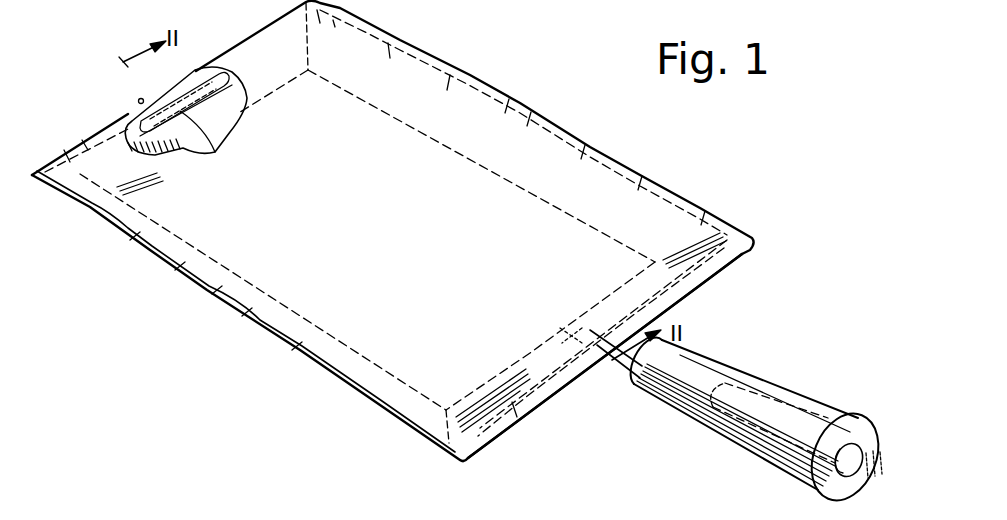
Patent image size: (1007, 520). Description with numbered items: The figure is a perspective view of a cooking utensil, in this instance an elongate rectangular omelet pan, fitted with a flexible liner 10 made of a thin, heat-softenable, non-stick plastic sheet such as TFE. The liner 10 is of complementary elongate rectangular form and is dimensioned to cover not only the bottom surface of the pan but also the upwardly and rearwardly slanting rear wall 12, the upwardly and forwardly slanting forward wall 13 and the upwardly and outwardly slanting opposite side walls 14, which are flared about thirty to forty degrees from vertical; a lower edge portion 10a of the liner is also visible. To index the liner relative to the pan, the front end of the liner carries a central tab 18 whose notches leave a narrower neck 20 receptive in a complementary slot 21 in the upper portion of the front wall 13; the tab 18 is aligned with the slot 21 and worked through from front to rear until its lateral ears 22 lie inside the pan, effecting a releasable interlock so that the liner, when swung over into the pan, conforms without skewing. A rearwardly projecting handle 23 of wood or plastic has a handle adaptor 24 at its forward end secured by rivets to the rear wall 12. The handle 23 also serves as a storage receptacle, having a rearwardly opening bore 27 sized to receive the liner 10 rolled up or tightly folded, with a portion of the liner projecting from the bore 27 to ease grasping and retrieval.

The liner 10 is at (583, 237).
The near edge of tray 10a is at (540, 407).
The rear wall 12 is at (692, 283).
The forward wall 13 is at (230, 101).
The side walls 14 is at (509, 104).
The central tab 18 is at (215, 152).
The neck 20 is at (138, 100).
The slot 21 is at (192, 80).
The lateral ears 22 is at (224, 82).
The handle 23 is at (707, 367).
The handle adaptor 24 is at (627, 368).
The bore 27 is at (840, 471).